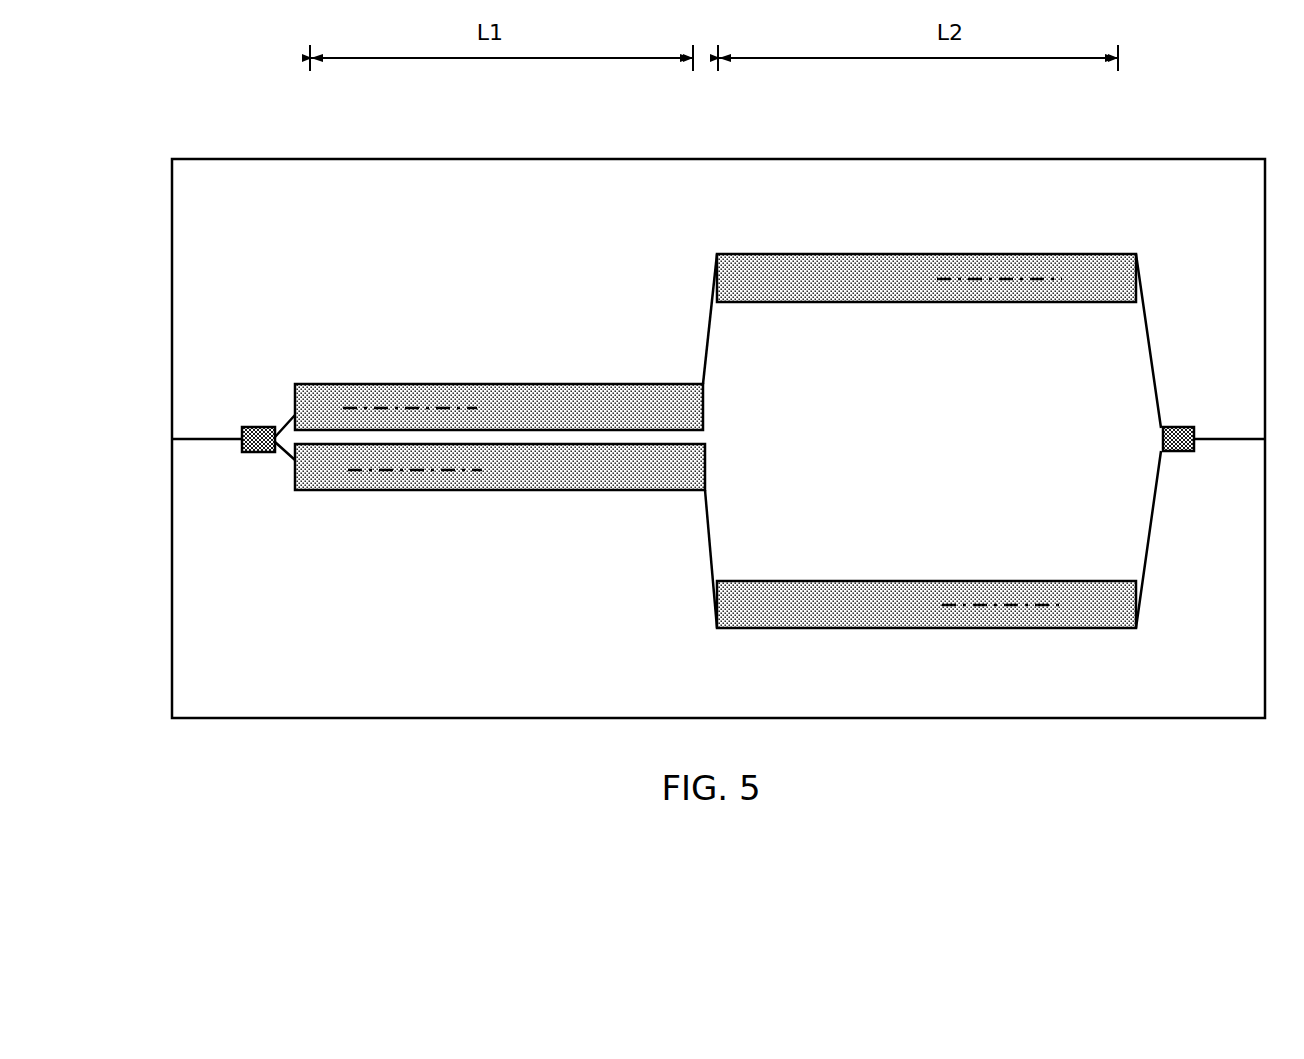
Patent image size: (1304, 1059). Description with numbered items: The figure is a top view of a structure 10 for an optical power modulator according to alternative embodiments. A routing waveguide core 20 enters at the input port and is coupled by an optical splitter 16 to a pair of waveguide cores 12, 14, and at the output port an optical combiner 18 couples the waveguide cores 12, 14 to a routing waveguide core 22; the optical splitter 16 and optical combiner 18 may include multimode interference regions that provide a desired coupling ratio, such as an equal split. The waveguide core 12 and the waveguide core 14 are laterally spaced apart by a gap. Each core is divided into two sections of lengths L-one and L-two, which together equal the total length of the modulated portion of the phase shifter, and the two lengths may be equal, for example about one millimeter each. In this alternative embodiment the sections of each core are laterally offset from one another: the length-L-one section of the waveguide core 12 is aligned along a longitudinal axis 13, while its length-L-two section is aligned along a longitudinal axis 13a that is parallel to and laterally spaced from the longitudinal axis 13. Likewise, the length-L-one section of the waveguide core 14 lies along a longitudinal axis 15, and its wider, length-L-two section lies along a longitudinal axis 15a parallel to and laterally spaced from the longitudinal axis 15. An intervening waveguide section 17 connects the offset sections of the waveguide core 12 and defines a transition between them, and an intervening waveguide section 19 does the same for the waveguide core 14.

The structure 10 is at (308, 248).
The waveguide core 12 is at (560, 403).
The longitudinal axis 13 is at (407, 408).
The longitudinal axis 13a is at (1002, 279).
The waveguide core 14 is at (585, 465).
The longitudinal axis 15 is at (385, 470).
The longitudinal axis 15a is at (980, 605).
The optical splitter 16 is at (257, 430).
The intervening waveguide section 17 is at (709, 356).
The optical combiner 18 is at (1176, 440).
The intervening waveguide section 19 is at (711, 522).
The routing waveguide core 20 is at (193, 442).
The routing waveguide core 22 is at (1228, 436).